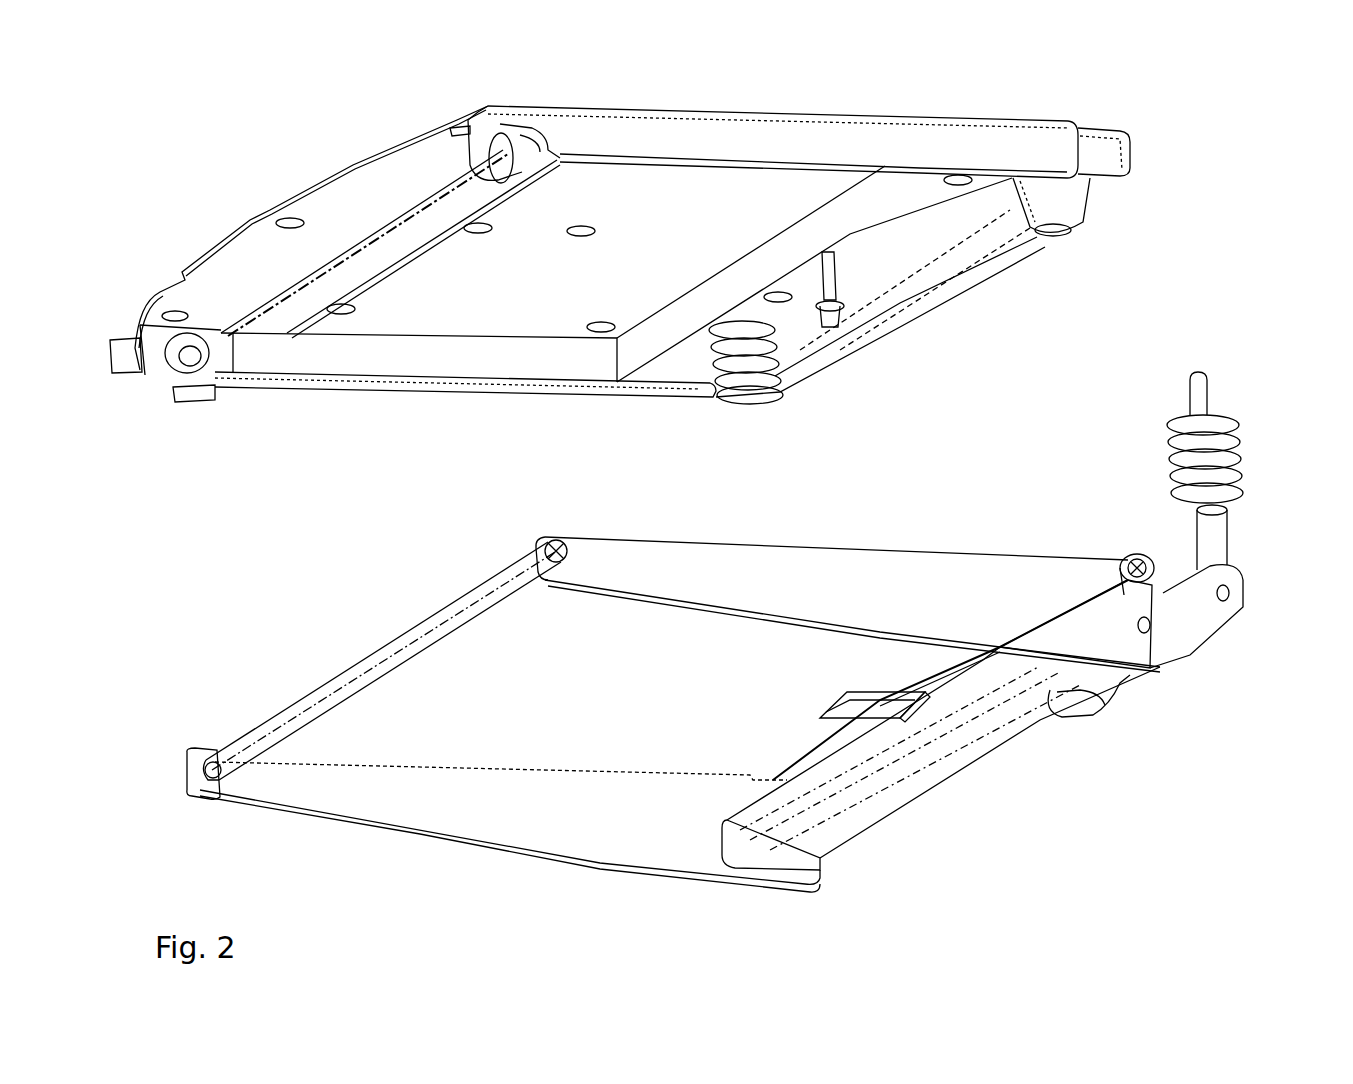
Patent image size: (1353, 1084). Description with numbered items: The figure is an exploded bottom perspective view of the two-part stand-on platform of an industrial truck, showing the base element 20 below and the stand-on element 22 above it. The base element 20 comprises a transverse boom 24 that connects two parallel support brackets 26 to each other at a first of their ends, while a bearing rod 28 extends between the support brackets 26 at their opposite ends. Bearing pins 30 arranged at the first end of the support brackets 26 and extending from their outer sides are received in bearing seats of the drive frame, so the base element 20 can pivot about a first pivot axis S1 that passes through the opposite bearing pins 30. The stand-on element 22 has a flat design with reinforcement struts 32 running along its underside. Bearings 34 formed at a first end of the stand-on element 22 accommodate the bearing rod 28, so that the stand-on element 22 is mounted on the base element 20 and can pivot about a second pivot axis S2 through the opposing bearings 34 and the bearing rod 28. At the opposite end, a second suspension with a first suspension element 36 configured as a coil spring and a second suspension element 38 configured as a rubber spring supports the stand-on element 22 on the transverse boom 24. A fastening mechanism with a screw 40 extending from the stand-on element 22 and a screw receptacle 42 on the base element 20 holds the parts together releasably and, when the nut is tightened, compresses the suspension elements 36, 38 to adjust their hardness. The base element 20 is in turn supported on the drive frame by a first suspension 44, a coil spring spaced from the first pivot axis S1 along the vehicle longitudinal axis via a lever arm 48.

The base element 20 is at (982, 805).
The stand-on element 22 is at (237, 190).
The transverse boom 24 is at (988, 738).
The support brackets 26 is at (758, 577).
The bearing rod 28 is at (257, 730).
The bearing pins 30 is at (1137, 560).
The reinforcement struts 32 is at (855, 215).
The bearings 34 is at (512, 148).
The first suspension element 36 is at (752, 380).
The second suspension element 38 is at (1063, 210).
The screw 40 is at (836, 312).
The screw receptacle 42 is at (830, 713).
The first suspension 44 is at (1217, 460).
The lever arm 48 is at (1180, 617).
The first pivot axis S1 is at (1047, 628).
The second pivot axis S2 is at (337, 690).